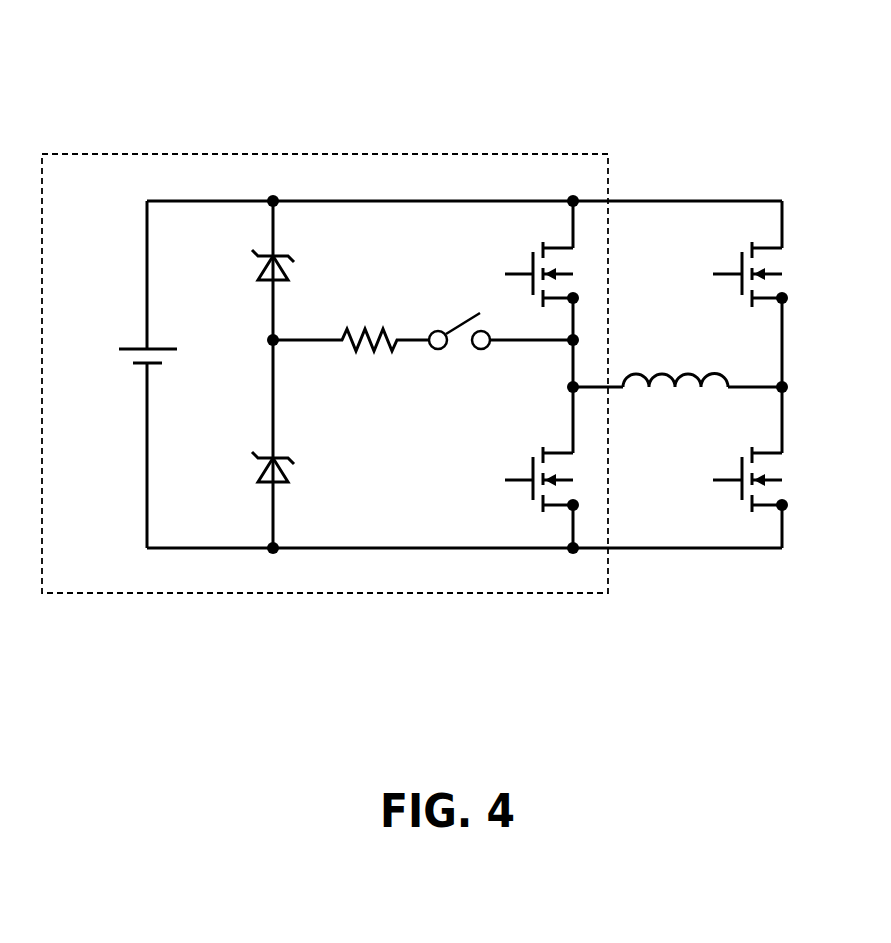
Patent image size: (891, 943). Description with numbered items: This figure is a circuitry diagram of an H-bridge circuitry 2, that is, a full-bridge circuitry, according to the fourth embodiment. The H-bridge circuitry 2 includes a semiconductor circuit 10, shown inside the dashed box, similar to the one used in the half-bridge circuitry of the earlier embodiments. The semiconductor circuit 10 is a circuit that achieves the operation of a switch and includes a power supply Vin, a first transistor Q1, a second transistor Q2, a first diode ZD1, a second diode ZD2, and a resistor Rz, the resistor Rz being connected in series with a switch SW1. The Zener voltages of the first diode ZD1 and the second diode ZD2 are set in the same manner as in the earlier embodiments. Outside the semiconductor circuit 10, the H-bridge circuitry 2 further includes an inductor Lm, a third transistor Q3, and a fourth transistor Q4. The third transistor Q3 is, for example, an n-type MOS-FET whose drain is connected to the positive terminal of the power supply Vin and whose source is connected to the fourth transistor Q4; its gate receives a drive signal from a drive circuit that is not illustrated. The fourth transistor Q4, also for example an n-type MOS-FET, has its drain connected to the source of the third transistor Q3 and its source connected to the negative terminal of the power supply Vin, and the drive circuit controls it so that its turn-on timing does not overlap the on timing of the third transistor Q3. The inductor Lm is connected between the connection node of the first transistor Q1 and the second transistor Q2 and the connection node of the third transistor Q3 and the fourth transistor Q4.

The H-bridge circuitry 2 is at (757, 95).
The semiconductor circuit 10 is at (514, 154).
The power supply Vin is at (130, 374).
The first diode ZD1 is at (302, 251).
The second diode ZD2 is at (303, 458).
The resistor Rz is at (383, 360).
The switch SW1 is at (459, 352).
The first transistor Q1 is at (535, 264).
The second transistor Q2 is at (535, 467).
The third transistor Q3 is at (770, 269).
The fourth transistor Q4 is at (773, 474).
The inductor Lm is at (675, 361).